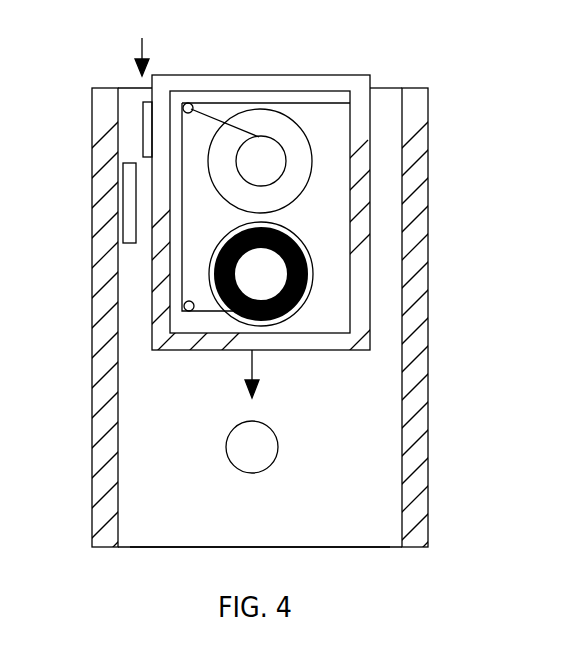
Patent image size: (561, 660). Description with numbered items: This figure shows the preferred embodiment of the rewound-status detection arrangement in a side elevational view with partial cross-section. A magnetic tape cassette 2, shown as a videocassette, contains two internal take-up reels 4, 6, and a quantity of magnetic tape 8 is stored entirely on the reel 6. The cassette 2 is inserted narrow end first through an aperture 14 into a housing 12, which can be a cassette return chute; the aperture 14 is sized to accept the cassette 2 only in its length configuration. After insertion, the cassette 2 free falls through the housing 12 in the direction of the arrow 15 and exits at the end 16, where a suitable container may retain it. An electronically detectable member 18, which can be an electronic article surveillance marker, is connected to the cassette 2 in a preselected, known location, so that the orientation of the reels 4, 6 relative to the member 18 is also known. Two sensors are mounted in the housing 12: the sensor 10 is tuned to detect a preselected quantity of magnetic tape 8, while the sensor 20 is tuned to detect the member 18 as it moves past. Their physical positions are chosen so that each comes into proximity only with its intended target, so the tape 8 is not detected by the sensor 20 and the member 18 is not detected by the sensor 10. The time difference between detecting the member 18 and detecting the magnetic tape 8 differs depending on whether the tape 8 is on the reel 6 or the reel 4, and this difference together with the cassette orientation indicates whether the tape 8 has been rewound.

The magnetic tape cassette 2 is at (320, 75).
The take-up reel 4 is at (299, 131).
The take-up reel 6 is at (294, 235).
The magnetic tape 8 is at (306, 275).
The sensor 10 is at (276, 438).
The housing 12 is at (428, 117).
The aperture 14 is at (144, 42).
The arrow 15 is at (265, 374).
The end 16 is at (268, 524).
The electronically detectable member 18 is at (142, 125).
The sensor 20 is at (123, 195).